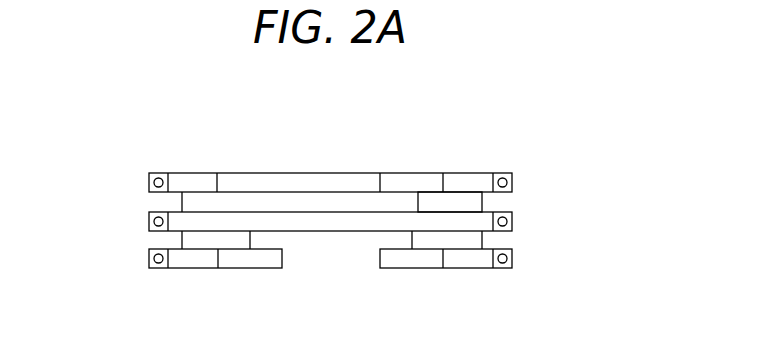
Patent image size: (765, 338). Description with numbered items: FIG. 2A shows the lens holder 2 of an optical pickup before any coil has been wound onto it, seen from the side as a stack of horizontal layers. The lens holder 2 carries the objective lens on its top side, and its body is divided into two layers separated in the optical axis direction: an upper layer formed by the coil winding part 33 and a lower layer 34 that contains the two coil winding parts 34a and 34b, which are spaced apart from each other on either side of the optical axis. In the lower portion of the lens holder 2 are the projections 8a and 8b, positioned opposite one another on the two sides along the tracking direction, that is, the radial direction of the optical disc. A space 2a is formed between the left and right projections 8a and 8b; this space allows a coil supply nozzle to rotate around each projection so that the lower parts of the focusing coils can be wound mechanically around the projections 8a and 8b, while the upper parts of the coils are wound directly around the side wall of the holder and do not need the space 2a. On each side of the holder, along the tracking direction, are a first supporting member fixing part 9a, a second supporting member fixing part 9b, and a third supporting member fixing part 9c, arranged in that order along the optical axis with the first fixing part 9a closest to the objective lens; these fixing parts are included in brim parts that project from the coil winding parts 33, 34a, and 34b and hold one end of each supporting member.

The lens holder 2 is at (467, 173).
The space 2a is at (332, 255).
The projection 8a is at (205, 240).
The projection 8b is at (466, 240).
The first supporting member fixing part 9a is at (149, 183).
The second supporting member fixing part 9b is at (149, 222).
The third supporting member fixing part 9c is at (149, 259).
The coil winding part 33 is at (482, 202).
The layer 34 is at (327, 118).
The coil winding part 34a is at (231, 239).
The coil winding part 34b is at (428, 240).